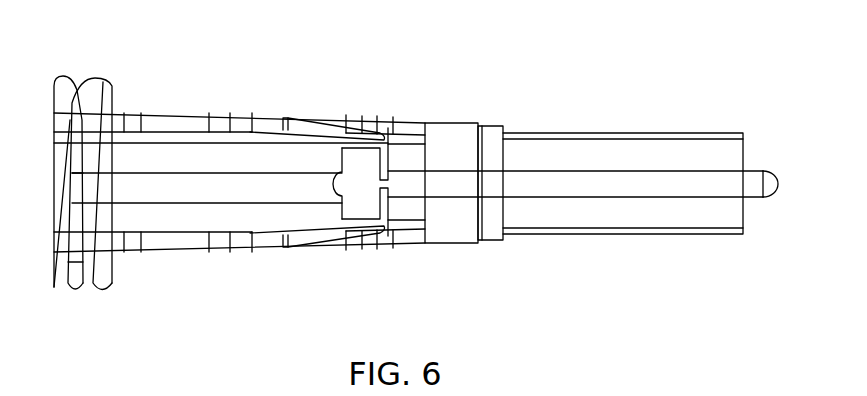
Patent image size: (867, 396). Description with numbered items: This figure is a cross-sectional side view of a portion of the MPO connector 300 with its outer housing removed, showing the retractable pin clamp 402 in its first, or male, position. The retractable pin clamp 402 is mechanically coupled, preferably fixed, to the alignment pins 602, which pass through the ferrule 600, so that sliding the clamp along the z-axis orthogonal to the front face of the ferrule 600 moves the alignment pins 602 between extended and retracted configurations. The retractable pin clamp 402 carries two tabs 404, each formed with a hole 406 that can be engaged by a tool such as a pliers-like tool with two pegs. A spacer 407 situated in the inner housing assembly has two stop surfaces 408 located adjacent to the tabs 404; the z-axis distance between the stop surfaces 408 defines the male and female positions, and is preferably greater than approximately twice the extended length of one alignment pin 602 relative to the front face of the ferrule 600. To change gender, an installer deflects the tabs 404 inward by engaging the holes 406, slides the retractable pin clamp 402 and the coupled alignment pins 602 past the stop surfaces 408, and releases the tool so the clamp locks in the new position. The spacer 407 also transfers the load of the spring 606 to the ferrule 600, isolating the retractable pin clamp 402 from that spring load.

The MPO connector 300 is at (619, 79).
The retractable pin clamp 402 is at (344, 125).
The tab 404 is at (282, 130).
The hole 406 is at (287, 120).
The spacer 407 is at (393, 123).
The stop surface 408 is at (122, 112).
The ferrule 600 is at (703, 208).
The alignment pin 602 is at (756, 188).
The spring 606 is at (84, 280).